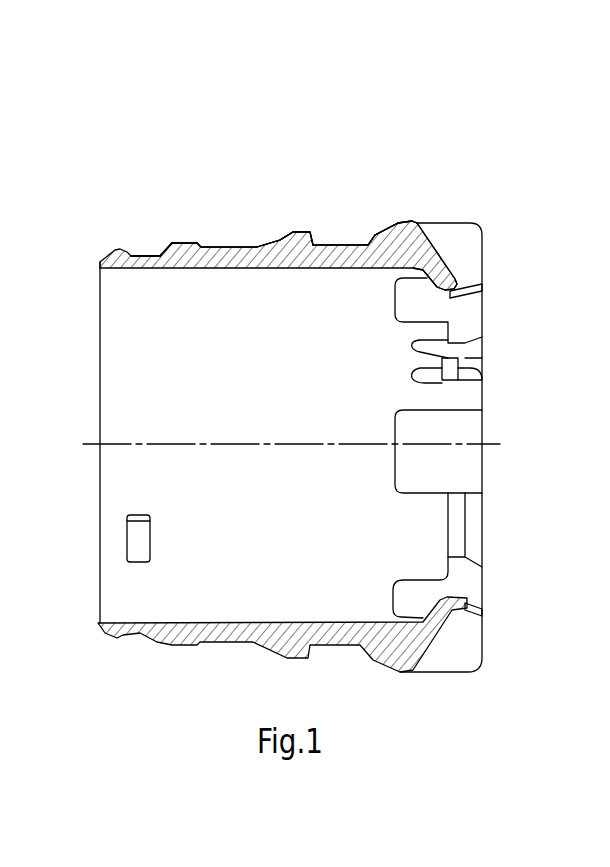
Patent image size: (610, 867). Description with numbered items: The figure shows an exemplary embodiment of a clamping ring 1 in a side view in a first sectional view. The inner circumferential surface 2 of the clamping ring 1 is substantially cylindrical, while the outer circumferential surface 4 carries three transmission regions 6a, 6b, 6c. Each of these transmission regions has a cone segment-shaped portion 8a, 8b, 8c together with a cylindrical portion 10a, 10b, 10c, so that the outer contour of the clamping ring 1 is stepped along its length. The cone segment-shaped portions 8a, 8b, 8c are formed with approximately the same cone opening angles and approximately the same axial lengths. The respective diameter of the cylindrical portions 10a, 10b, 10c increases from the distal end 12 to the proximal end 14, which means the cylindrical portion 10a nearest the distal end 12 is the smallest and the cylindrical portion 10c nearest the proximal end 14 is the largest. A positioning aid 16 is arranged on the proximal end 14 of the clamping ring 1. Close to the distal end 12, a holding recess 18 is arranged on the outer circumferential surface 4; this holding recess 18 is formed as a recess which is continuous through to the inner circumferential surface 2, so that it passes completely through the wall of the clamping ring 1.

The clamping ring 1 is at (505, 155).
The inner circumferential surface 2 is at (244, 290).
The outer circumferential surface 4 is at (230, 124).
The transmission region 6a is at (165, 170).
The transmission region 6b is at (285, 166).
The transmission region 6c is at (396, 156).
The cone segment-shaped portion 8a is at (160, 249).
The cone segment-shaped portion 8b is at (279, 238).
The cone segment-shaped portion 8c is at (389, 225).
The cylindrical portion 10a is at (181, 242).
The cylindrical portion 10b is at (303, 231).
The cylindrical portion 10c is at (412, 222).
The distal end 12 is at (78, 346).
The proximal end 14 is at (508, 348).
The positioning aid 16 is at (440, 273).
The holding recess 18 is at (135, 540).